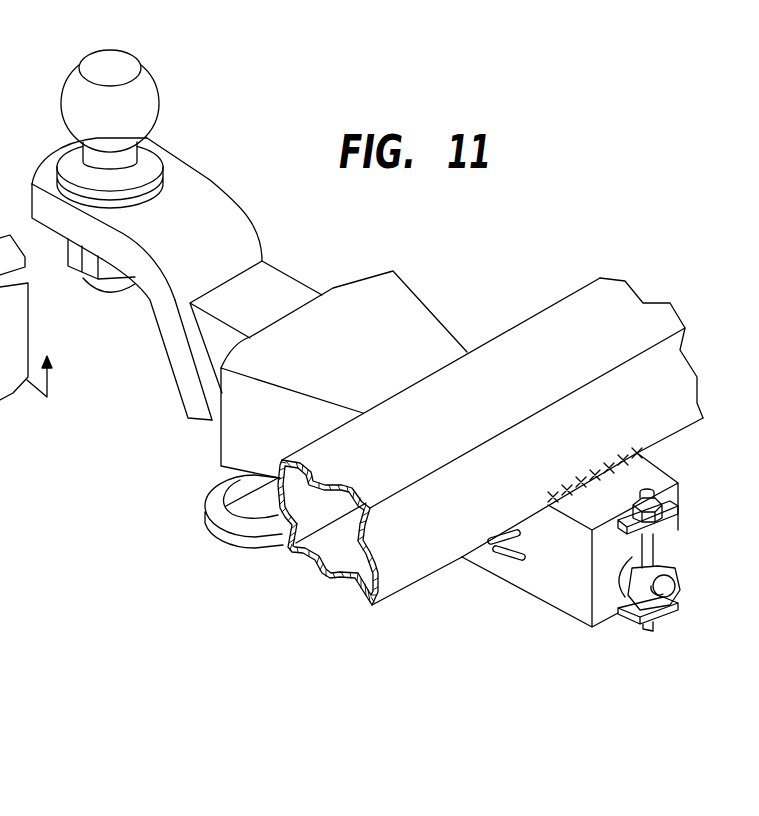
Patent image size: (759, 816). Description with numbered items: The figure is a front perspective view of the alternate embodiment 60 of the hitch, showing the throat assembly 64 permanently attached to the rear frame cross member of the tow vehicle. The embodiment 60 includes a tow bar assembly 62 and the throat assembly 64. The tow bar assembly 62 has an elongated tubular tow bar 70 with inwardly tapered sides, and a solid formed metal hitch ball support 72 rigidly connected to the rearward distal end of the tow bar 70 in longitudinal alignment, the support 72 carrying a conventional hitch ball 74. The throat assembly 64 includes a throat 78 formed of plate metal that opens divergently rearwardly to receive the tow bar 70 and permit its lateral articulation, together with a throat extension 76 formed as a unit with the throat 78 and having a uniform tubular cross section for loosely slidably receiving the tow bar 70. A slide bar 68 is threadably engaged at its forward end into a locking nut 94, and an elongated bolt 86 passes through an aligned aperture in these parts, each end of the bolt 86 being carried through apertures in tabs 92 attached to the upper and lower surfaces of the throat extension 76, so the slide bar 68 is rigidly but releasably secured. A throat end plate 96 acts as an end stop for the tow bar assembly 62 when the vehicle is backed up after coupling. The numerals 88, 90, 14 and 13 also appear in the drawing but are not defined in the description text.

The alternate embodiment 60 is at (534, 232).
The tow bar assembly 62 is at (167, 353).
The throat assembly 64 is at (450, 313).
The slide bar 68 is at (663, 594).
The tow bar 70 is at (298, 280).
The hitch ball support 72 is at (218, 178).
The hitch ball 74 is at (152, 68).
The throat extension 76 is at (14, 359).
The throat 78 is at (441, 320).
The bolt 86 is at (618, 611).
The weld 88 is at (590, 487).
The base plate 90 is at (640, 622).
The tabs 92 is at (678, 504).
The locking nut 94 is at (668, 560).
The throat end plate 96 is at (607, 562).
The tube 14 is at (430, 577).
The section view indicator 13 is at (44, 366).